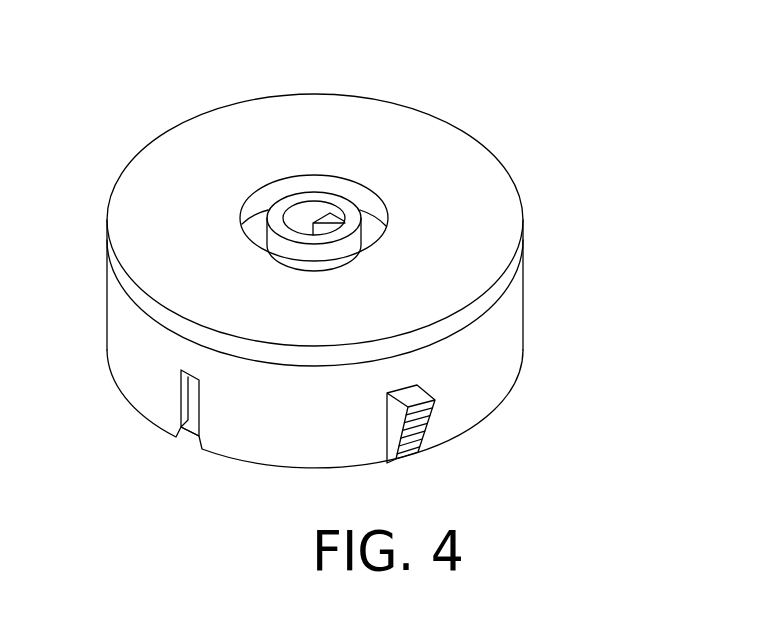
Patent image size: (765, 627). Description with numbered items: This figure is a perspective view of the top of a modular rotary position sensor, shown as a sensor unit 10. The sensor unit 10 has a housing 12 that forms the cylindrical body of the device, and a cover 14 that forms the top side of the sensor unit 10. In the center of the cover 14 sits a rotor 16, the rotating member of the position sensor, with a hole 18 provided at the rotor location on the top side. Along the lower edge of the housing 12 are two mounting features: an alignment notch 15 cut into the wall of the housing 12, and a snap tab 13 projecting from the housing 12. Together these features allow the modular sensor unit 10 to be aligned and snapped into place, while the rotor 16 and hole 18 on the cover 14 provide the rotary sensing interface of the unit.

The sensor unit 10 is at (355, 255).
The housing 12 is at (493, 367).
The snap tab 13 is at (422, 428).
The cover 14 is at (480, 185).
The alignment notch 15 is at (192, 436).
The rotor 16 is at (313, 215).
The hole 18 is at (373, 231).